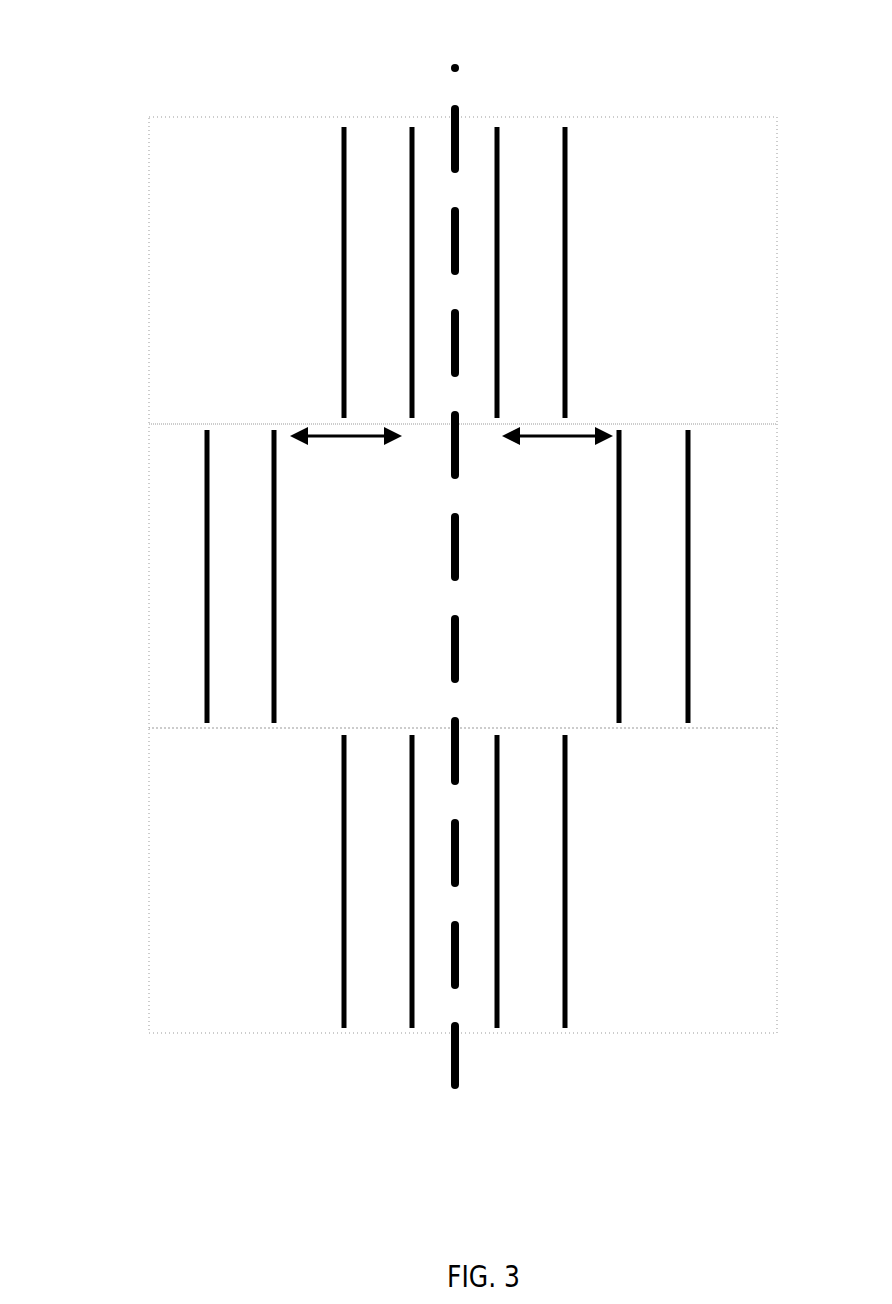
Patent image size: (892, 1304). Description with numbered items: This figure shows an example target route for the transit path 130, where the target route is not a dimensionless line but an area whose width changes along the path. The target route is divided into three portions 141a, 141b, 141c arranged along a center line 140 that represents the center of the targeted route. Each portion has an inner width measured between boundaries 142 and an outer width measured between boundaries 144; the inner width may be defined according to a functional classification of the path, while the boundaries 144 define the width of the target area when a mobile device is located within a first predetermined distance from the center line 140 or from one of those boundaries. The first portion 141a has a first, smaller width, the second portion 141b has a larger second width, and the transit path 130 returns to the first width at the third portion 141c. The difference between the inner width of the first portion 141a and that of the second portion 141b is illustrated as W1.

The transit path 130 is at (310, 62).
The center line 140 is at (452, 107).
The first portion 141a is at (149, 229).
The second portion 141b is at (149, 486).
The third portion 141c is at (149, 868).
The boundaries 142 is at (410, 170).
The boundaries 144 is at (342, 216).
The width difference W1 is at (451, 447).